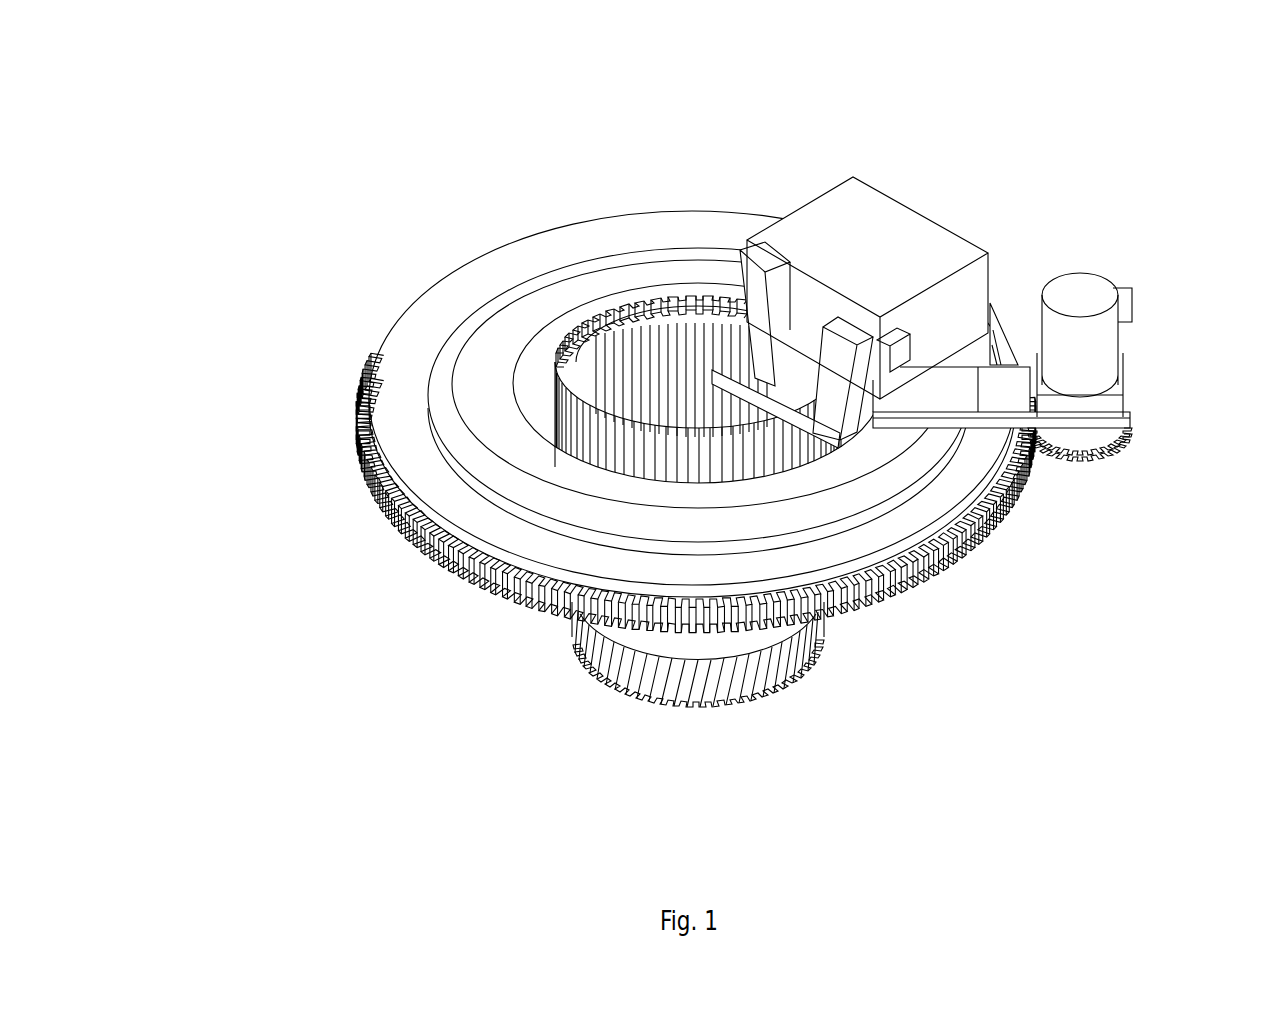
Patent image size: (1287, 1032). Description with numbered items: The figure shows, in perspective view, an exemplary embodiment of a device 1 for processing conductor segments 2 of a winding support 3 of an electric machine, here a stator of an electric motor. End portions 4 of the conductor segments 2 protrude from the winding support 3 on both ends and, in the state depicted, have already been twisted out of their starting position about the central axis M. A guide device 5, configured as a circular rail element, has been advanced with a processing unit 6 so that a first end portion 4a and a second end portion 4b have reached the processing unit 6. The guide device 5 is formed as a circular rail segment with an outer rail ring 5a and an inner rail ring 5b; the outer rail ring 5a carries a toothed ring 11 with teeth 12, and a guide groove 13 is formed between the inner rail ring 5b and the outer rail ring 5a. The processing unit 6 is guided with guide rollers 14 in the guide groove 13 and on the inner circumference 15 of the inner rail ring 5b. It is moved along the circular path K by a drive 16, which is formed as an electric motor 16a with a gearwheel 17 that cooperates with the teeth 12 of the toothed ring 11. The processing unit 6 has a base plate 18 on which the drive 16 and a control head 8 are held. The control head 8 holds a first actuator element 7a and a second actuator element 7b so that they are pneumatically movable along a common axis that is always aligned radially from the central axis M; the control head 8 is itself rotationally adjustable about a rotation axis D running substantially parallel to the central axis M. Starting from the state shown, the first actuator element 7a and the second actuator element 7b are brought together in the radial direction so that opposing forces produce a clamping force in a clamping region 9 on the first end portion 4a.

The device 1 is at (1021, 146).
The conductor segments 2 is at (816, 663).
The winding support 3 is at (647, 642).
The end portions 4 is at (745, 677).
The first end portion 4a is at (768, 415).
The second end portion 4b is at (778, 388).
The guide device 5 is at (482, 368).
The outer rail ring 5a is at (492, 268).
The inner rail ring 5b is at (557, 303).
The processing unit 6 is at (1128, 388).
The first actuator element 7a is at (776, 402).
The second actuator element 7b is at (737, 386).
The control head 8 is at (948, 250).
The clamping region 9 is at (776, 398).
The toothed ring 11 is at (560, 596).
The teeth 12 is at (360, 453).
The guide groove 13 is at (463, 467).
The guide rollers 14 is at (865, 433).
The inner circumference 15 is at (540, 350).
The drive 16 is at (1094, 352).
The electric motor 16a is at (1083, 303).
The gearwheel 17 is at (1082, 435).
The base plate 18 is at (997, 428).
The central axis M is at (699, 470).
The rotation axis D is at (865, 250).
The circular path K is at (590, 515).